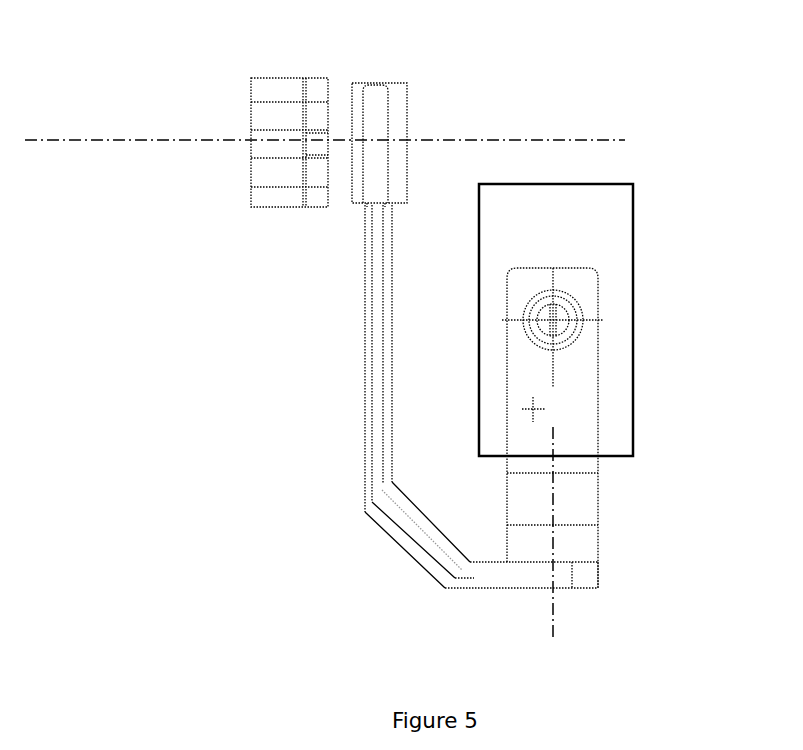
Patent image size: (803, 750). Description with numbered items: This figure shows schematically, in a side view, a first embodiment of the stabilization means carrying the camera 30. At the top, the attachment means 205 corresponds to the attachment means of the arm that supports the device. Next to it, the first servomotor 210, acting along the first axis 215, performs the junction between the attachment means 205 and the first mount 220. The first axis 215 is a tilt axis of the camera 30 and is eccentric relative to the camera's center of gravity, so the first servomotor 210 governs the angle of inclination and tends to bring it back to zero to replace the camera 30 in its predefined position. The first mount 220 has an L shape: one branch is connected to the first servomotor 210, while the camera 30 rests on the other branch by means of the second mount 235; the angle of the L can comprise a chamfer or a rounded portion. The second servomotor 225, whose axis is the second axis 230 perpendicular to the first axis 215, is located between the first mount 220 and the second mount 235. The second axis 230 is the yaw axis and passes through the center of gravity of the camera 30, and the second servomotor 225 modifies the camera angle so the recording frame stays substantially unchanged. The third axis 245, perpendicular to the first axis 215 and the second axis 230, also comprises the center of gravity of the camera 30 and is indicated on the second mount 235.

The camera 30 is at (602, 251).
The attachment means 205 is at (272, 88).
The first servomotor 210 is at (450, 110).
The first axis 215 is at (392, 140).
The first mount 220 is at (367, 219).
The second servomotor 225 is at (580, 577).
The second axis 230 is at (553, 622).
The second mount 235 is at (585, 543).
The third axis 245 is at (553, 320).